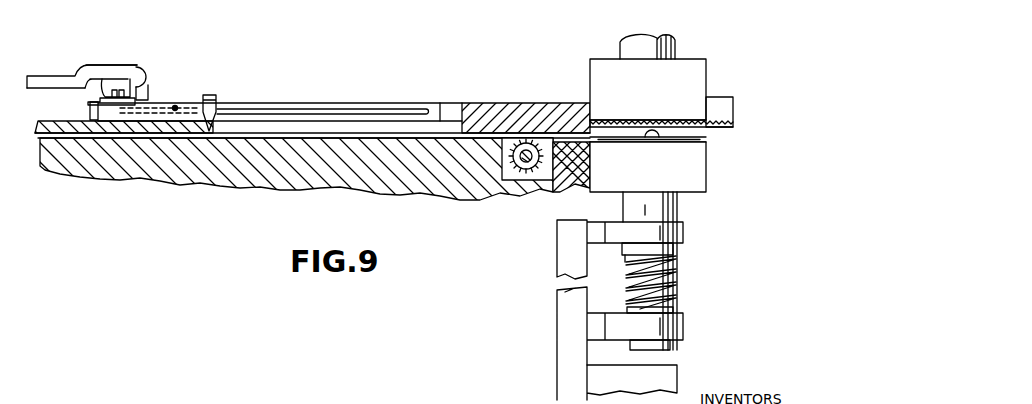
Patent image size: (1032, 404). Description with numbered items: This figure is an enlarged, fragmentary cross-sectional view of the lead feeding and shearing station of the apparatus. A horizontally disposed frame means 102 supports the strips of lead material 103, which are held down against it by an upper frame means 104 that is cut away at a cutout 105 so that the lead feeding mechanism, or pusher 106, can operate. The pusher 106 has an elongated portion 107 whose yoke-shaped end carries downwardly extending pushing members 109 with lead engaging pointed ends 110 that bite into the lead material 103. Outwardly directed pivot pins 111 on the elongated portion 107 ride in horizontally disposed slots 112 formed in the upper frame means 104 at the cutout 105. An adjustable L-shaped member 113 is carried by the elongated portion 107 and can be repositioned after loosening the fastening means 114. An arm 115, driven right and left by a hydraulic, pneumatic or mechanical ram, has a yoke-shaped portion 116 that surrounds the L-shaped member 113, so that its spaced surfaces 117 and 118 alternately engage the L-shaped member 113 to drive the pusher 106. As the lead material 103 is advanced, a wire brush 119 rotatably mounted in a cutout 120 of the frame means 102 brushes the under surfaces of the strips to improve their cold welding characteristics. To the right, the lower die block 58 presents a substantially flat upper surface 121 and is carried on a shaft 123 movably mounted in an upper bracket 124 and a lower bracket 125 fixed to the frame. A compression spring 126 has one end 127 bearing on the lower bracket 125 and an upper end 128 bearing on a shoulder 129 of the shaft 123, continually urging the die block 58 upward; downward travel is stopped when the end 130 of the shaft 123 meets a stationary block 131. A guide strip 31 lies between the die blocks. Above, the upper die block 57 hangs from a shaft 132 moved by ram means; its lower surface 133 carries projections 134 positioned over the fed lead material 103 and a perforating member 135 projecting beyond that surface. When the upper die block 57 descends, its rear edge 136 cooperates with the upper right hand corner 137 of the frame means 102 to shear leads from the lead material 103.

The guide strip 31 is at (692, 138).
The upper die block 57 is at (697, 78).
The die block 58 is at (697, 158).
The frame means 102 is at (330, 182).
The lead material 103 is at (385, 140).
The upper frame means 104 is at (490, 115).
The cutout 105 is at (450, 102).
The pusher 106 is at (188, 87).
The elongated portion 107 is at (165, 122).
The pushing members 109 is at (214, 97).
The pointed ends 110 is at (210, 128).
The pivot pins 111 is at (177, 108).
The slots 112 is at (345, 107).
The L-shaped member 113 is at (128, 78).
The fastening means 114 is at (112, 95).
The arm 115 is at (50, 77).
The yoke-shaped portion 116 is at (115, 65).
The surface 117 is at (87, 103).
The surface 118 is at (152, 67).
The wire brush 119 is at (533, 143).
The cutout 120 is at (510, 182).
The upper surface 121 is at (652, 140).
The shaft 123 is at (677, 207).
The bracket 124 is at (683, 233).
The lower bracket 125 is at (683, 327).
The compression spring 126 is at (673, 275).
The end 127 is at (673, 307).
The upper end 128 is at (673, 252).
The shoulder 129 is at (632, 257).
The end 130 is at (655, 348).
The stationary block 131 is at (670, 377).
The shaft 132 is at (673, 50).
The lower surface 133 is at (633, 123).
The projections 134 is at (617, 122).
The perforating member 135 is at (727, 113).
The rear edge 136 is at (590, 122).
The upper right hand corner 137 is at (573, 186).